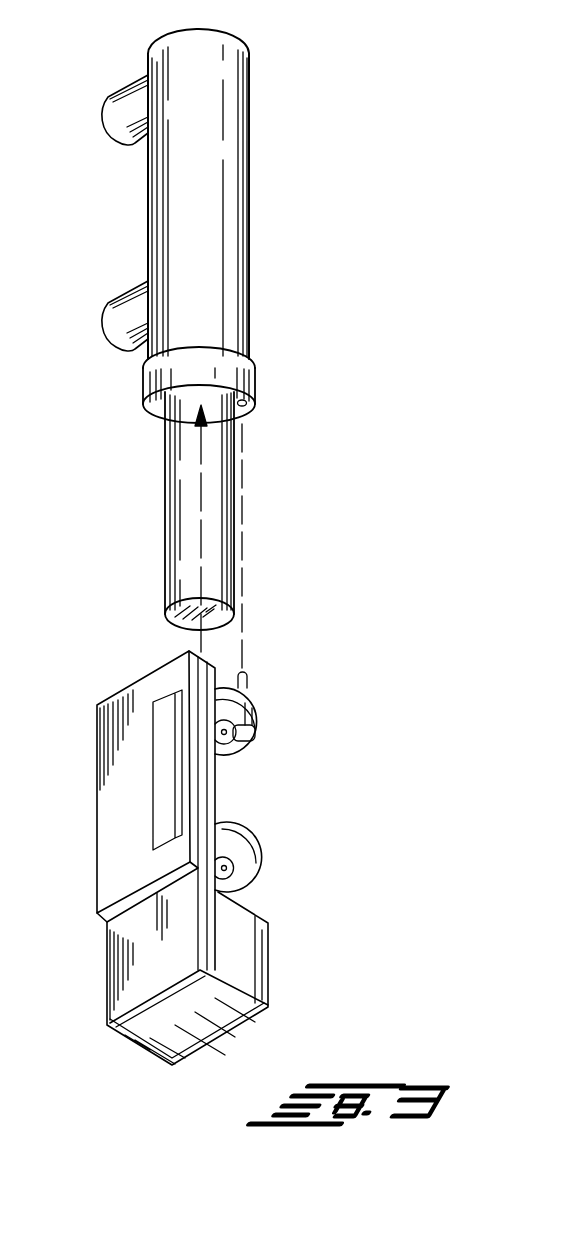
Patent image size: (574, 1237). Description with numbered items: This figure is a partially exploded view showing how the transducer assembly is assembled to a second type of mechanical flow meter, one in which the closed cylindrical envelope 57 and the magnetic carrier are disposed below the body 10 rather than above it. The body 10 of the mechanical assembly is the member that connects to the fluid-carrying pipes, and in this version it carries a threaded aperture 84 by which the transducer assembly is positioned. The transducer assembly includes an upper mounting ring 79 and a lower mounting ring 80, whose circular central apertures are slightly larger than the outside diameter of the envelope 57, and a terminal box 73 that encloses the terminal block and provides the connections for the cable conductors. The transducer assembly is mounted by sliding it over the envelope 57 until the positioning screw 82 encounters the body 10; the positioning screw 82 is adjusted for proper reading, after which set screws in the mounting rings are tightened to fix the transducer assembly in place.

The body 10 is at (250, 325).
The threaded aperture 84 is at (246, 406).
The closed cylindrical envelope 57 is at (165, 512).
The positioning screw 82 is at (247, 682).
The lower mounting ring 80 is at (257, 718).
The upper mounting ring 79 is at (257, 849).
The terminal box 73 is at (247, 923).